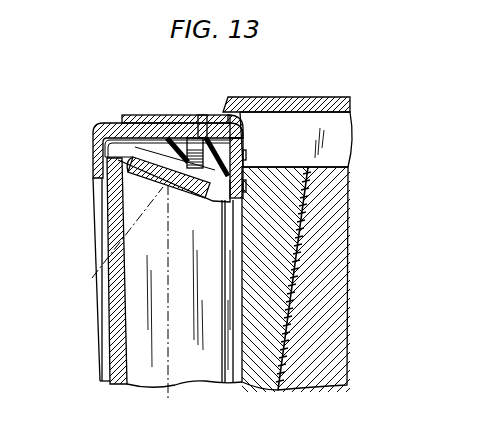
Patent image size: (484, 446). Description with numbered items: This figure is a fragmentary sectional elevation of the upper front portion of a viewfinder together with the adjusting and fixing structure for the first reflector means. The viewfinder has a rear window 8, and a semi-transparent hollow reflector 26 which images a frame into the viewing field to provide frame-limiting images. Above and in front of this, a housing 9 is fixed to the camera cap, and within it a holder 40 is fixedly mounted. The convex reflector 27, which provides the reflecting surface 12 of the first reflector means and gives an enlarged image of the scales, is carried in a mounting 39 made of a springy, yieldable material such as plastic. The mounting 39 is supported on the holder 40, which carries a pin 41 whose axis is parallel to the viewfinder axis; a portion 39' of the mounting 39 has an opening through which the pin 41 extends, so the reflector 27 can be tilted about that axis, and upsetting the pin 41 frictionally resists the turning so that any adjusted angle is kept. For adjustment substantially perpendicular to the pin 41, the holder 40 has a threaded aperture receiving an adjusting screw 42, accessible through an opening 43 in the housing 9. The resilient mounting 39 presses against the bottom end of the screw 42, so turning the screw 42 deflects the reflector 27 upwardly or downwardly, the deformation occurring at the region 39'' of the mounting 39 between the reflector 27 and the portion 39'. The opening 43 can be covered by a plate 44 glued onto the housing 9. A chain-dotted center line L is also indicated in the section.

The rear window 8 is at (333, 108).
The housing 9 is at (110, 128).
The reflecting surface 12 is at (107, 197).
The semi-transparent hollow reflector 26 is at (305, 226).
The convex reflector 27 is at (140, 170).
The mounting 39 is at (147, 144).
The portion of the mounting 39' is at (256, 160).
The region of the mounting 39'' is at (174, 195).
The holder 40 is at (220, 122).
The pin 41 is at (246, 167).
The adjusting screw 42 is at (175, 138).
The opening 43 is at (200, 127).
The plate 44 is at (125, 116).
The center line L is at (85, 280).